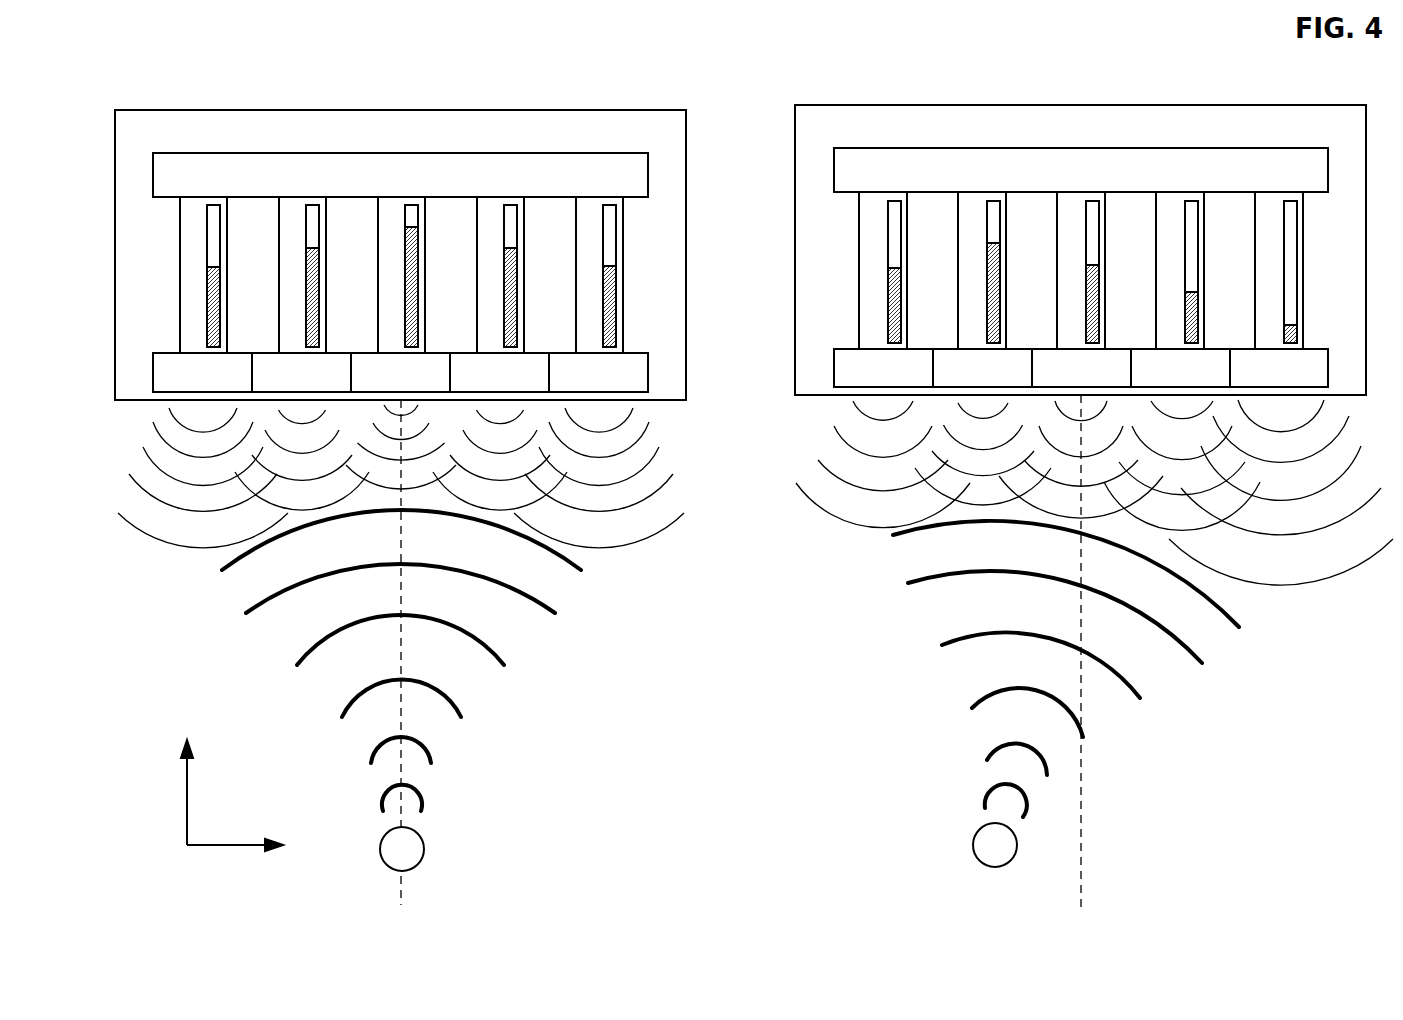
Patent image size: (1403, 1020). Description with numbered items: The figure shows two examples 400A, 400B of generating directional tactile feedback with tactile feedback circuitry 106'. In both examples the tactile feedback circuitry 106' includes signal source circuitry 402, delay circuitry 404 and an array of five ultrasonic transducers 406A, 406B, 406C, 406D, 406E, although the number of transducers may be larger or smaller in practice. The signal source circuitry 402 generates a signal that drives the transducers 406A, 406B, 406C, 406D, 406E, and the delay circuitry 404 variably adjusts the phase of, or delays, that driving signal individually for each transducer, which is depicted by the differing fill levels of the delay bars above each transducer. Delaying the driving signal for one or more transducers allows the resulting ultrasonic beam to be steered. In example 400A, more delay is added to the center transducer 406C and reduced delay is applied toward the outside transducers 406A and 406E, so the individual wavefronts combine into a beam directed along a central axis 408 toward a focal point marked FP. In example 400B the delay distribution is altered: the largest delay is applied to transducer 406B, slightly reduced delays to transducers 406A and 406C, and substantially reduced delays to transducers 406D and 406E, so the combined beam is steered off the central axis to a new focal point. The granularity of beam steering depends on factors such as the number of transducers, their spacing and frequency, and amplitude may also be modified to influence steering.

The example 400A is at (242, 98).
The example 400B is at (922, 98).
The tactile feedback circuitry 106' is at (740, 252).
The signal source circuitry 402 is at (1197, 181).
The delay circuitry 404 is at (180, 272).
The ultrasonic transducer 406A is at (182, 381).
The ultrasonic transducer 406B is at (281, 381).
The ultrasonic transducer 406C is at (380, 381).
The ultrasonic transducer 406D is at (479, 381).
The ultrasonic transducer 406E is at (938, 370).
The central axis 408 is at (385, 934).